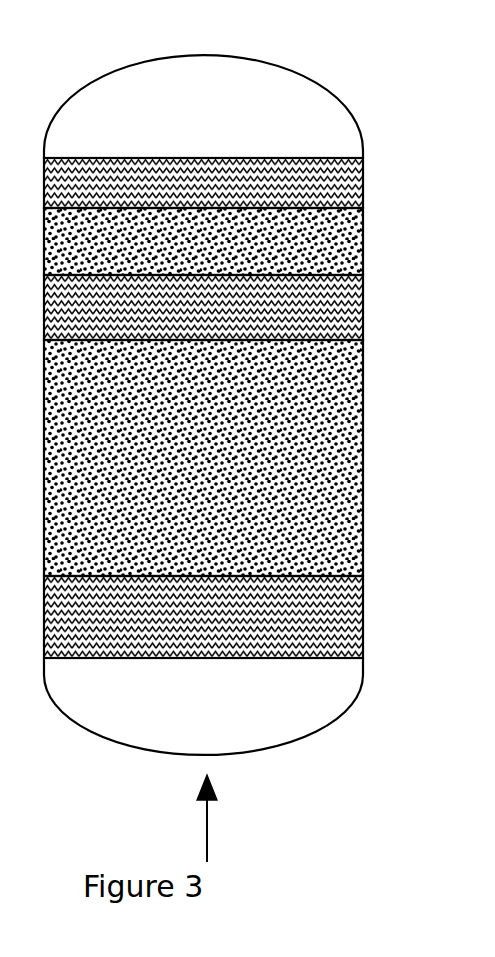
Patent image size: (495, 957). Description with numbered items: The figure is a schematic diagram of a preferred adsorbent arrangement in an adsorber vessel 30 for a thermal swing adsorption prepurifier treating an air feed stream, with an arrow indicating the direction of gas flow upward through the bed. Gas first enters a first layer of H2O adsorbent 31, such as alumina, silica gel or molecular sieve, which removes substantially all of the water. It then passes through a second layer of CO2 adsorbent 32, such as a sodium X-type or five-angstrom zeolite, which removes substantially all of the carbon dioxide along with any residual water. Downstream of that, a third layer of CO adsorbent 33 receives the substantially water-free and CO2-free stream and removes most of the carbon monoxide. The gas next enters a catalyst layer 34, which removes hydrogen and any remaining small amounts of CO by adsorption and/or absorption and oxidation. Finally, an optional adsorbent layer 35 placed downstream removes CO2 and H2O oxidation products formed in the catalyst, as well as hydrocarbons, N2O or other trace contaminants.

The vessel 30 is at (399, 357).
The first layer of H2O adsorbent 31 is at (203, 617).
The second layer of CO2 adsorbent 32 is at (203, 458).
The third layer of CO adsorbent 33 is at (203, 307).
The catalyst layer 34 is at (203, 241).
The optional adsorbent layer 35 is at (203, 183).